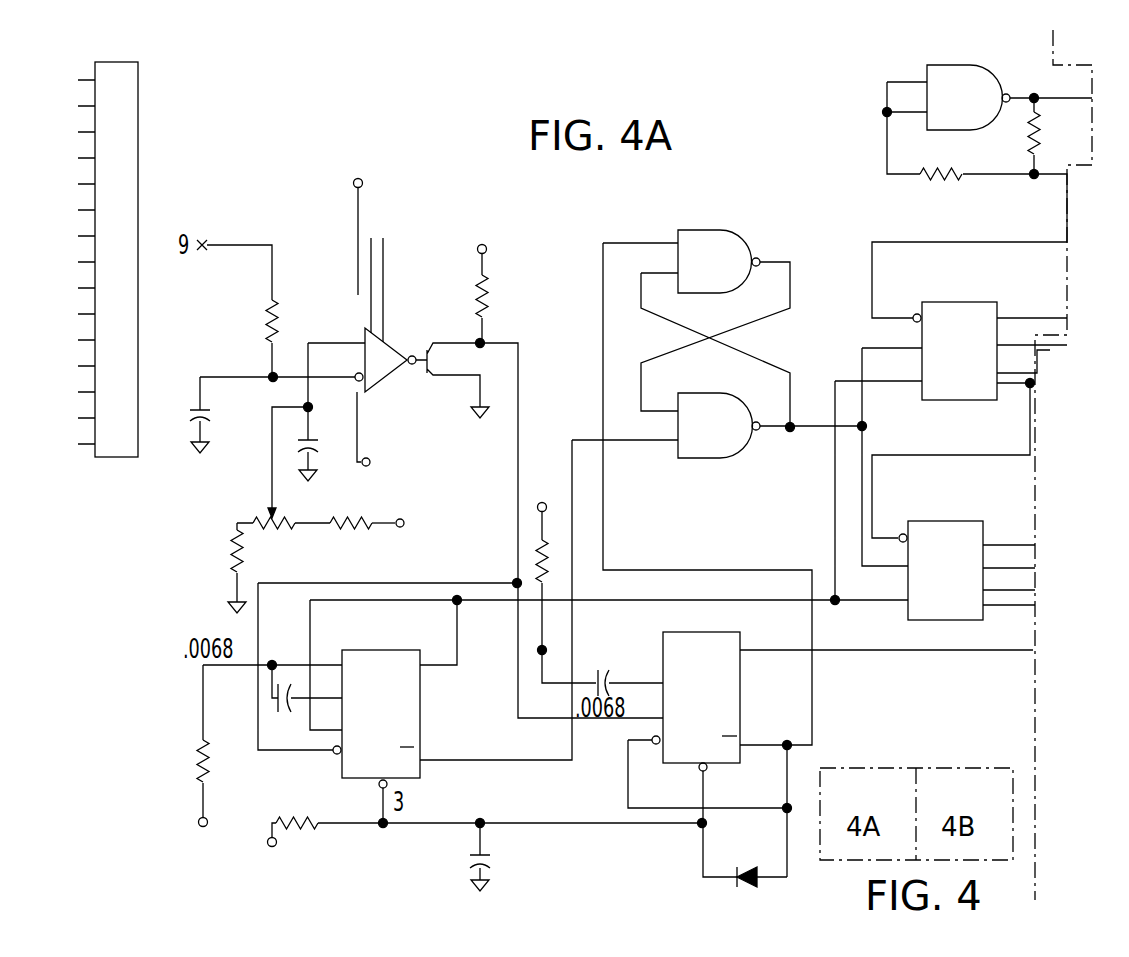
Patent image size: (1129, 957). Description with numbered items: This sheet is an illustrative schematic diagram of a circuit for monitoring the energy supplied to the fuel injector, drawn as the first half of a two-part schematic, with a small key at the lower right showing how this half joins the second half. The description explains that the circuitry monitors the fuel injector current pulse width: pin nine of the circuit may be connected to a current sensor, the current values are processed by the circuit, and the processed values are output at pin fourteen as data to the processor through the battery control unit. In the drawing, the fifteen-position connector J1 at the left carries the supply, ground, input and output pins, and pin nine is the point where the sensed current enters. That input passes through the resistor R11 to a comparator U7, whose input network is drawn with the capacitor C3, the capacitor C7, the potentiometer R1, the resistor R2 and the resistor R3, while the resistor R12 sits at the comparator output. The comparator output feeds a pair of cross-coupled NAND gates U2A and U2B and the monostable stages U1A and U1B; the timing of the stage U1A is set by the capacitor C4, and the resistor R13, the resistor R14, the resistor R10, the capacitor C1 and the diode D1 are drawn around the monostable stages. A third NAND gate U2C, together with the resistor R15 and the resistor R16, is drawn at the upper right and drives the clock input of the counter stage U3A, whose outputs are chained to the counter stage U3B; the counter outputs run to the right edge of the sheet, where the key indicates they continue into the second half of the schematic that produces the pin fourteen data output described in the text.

The connector CON15 J1 is at (91, 262).
The resistor 7.5K R11 is at (242, 327).
The capacitor .005 C3 is at (218, 415).
The capacitor 1 mfd C7 is at (335, 452).
The potentiometer 10K R1 is at (271, 484).
The resistor 10K R2 is at (208, 567).
The resistor 10K R3 is at (387, 516).
The comparator LM311 U7 is at (398, 309).
The resistor 2.2K R12 is at (498, 281).
The resistor 4.02K 1% R13 is at (485, 560).
The monostable 4538 U1A is at (385, 712).
The capacitor .0068 C4 is at (282, 668).
The resistor 4.02K 1% R14 is at (250, 762).
The resistor 1K R10 is at (475, 831).
The capacitor 1 mfd 25V C1 is at (535, 861).
The monostable 4538 U1B is at (691, 692).
The diode 1N4148 D1 is at (764, 877).
The NAND gate 4011 U2A is at (715, 257).
The NAND gate 4011 U2B is at (715, 422).
The NAND gate 4011 U2C is at (967, 91).
The resistor 3.0K R15 is at (962, 166).
The resistor 3.0K R16 is at (1055, 117).
The counter 4520 U3A is at (958, 346).
The counter 4520 U3B is at (950, 566).